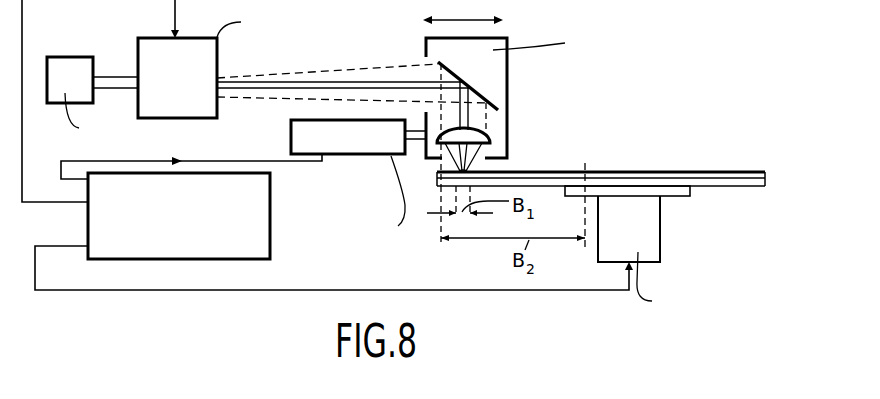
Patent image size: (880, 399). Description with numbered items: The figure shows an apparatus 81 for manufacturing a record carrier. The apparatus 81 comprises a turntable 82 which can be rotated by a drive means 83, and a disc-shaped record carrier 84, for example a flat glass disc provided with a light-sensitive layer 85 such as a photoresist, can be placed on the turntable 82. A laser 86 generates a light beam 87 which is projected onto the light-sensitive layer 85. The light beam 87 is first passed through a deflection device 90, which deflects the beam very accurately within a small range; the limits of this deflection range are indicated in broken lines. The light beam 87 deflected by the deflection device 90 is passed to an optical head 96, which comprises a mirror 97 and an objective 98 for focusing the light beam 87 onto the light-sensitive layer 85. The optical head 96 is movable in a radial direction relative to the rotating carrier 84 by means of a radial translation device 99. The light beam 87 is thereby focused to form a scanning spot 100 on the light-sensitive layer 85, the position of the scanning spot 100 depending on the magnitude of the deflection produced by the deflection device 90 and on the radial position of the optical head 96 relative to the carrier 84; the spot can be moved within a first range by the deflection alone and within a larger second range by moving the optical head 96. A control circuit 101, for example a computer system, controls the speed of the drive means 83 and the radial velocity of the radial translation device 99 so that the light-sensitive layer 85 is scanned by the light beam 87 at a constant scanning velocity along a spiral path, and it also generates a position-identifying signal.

The apparatus 81 is at (654, 70).
The turntable 82 is at (678, 198).
The drive means 83 is at (650, 250).
The record carrier 84 is at (732, 187).
The light-sensitive layer 85 is at (733, 172).
The laser 86 is at (67, 57).
The light beam 87 is at (114, 78).
The deflection device 90 is at (200, 120).
The optical head 96 is at (507, 62).
The mirror 97 is at (493, 103).
The objective 98 is at (475, 130).
The radial translation device 99 is at (357, 156).
The scanning spot 100 is at (468, 168).
The control circuit 101 is at (270, 248).